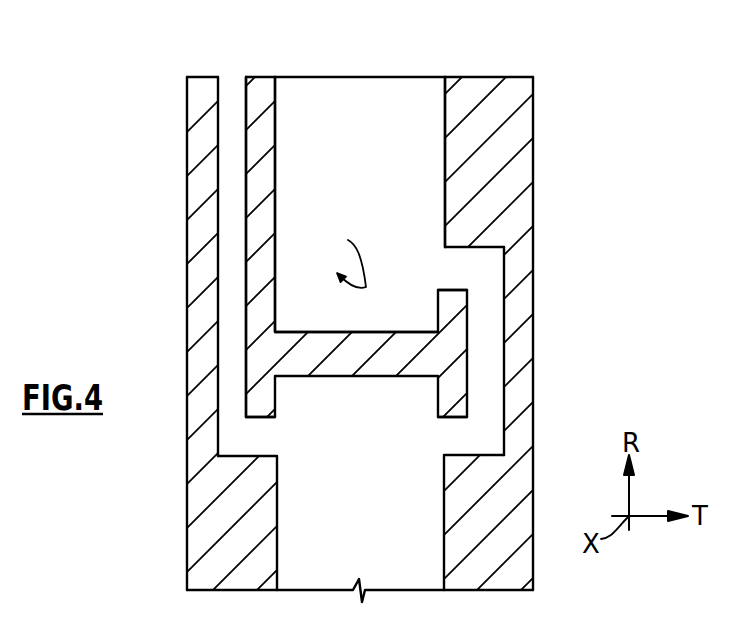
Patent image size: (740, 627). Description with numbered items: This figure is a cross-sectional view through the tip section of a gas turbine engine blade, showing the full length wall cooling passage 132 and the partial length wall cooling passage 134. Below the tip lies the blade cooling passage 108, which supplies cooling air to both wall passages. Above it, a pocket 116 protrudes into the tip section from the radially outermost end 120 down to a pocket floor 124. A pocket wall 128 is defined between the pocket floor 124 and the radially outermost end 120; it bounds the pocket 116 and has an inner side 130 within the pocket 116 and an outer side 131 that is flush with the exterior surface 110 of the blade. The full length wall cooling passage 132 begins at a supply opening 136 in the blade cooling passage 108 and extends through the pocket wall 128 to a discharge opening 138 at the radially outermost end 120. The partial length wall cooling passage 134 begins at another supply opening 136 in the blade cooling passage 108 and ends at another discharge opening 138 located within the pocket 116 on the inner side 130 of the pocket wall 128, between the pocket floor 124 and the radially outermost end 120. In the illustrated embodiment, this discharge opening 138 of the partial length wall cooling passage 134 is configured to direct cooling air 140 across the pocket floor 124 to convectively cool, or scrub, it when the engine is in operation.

The blade cooling passage 108 is at (392, 525).
The exterior surface 110 is at (370, 335).
The pocket 116 is at (392, 175).
The radially outermost end 120 is at (350, 77).
The pocket floor 124 is at (326, 292).
The pocket wall 128 is at (370, 335).
The inner side 130 is at (445, 212).
The outer side 131 is at (533, 213).
The full length wall cooling passage 132 is at (223, 296).
The partial length wall cooling passage 134 is at (493, 360).
The supply opening 136 is at (455, 435).
The discharge opening 138 is at (233, 78).
The cooling air 140 is at (334, 255).